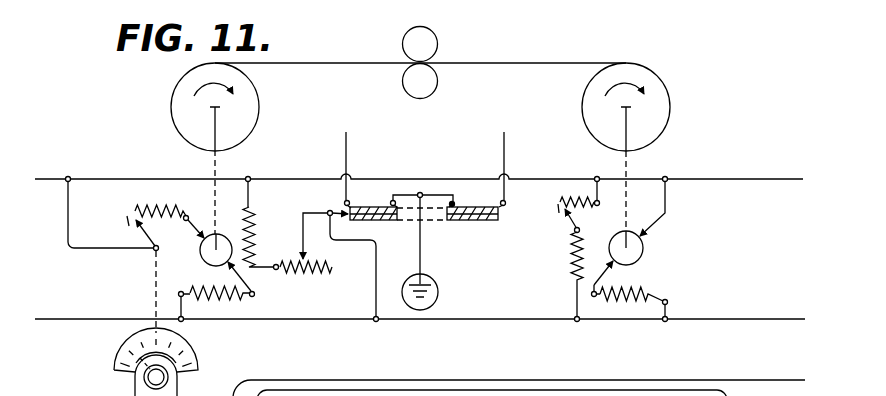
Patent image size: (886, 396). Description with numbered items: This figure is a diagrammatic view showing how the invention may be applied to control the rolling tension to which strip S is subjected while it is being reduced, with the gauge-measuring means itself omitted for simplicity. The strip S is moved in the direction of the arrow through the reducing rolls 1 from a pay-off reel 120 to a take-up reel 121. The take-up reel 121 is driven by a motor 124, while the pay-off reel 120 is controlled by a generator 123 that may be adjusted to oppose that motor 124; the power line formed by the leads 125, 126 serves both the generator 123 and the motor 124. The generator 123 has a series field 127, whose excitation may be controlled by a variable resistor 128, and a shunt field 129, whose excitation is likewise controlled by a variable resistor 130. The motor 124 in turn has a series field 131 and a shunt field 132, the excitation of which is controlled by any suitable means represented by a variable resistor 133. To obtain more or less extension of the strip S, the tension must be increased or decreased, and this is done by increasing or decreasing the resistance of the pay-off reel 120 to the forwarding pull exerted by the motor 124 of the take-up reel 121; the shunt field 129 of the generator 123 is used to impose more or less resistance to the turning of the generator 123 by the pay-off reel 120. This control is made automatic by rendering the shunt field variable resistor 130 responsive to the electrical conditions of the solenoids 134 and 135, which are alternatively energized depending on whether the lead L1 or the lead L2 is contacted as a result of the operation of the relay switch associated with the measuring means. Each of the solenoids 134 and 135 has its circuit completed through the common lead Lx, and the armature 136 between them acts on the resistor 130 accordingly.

The reducing rolls 1 is at (438, 44).
The strip S is at (528, 63).
The pay-off reel 120 is at (178, 90).
The take-up reel 121 is at (658, 94).
The generator 123 is at (201, 254).
The motor 124 is at (644, 251).
The lead 125 is at (719, 178).
The lead 126 is at (754, 313).
The series field 127 is at (193, 289).
The variable resistor 128 is at (147, 207).
The shunt field 129 is at (252, 225).
The variable resistor 130 is at (292, 275).
The series field 131 is at (652, 293).
The shunt field 132 is at (571, 257).
The variable resistor 133 is at (562, 201).
The solenoid 134 is at (378, 217).
The solenoid 135 is at (478, 217).
The armature 136 is at (429, 219).
The lead L1 is at (506, 160).
The lead L2 is at (348, 160).
The common lead Lx is at (439, 296).